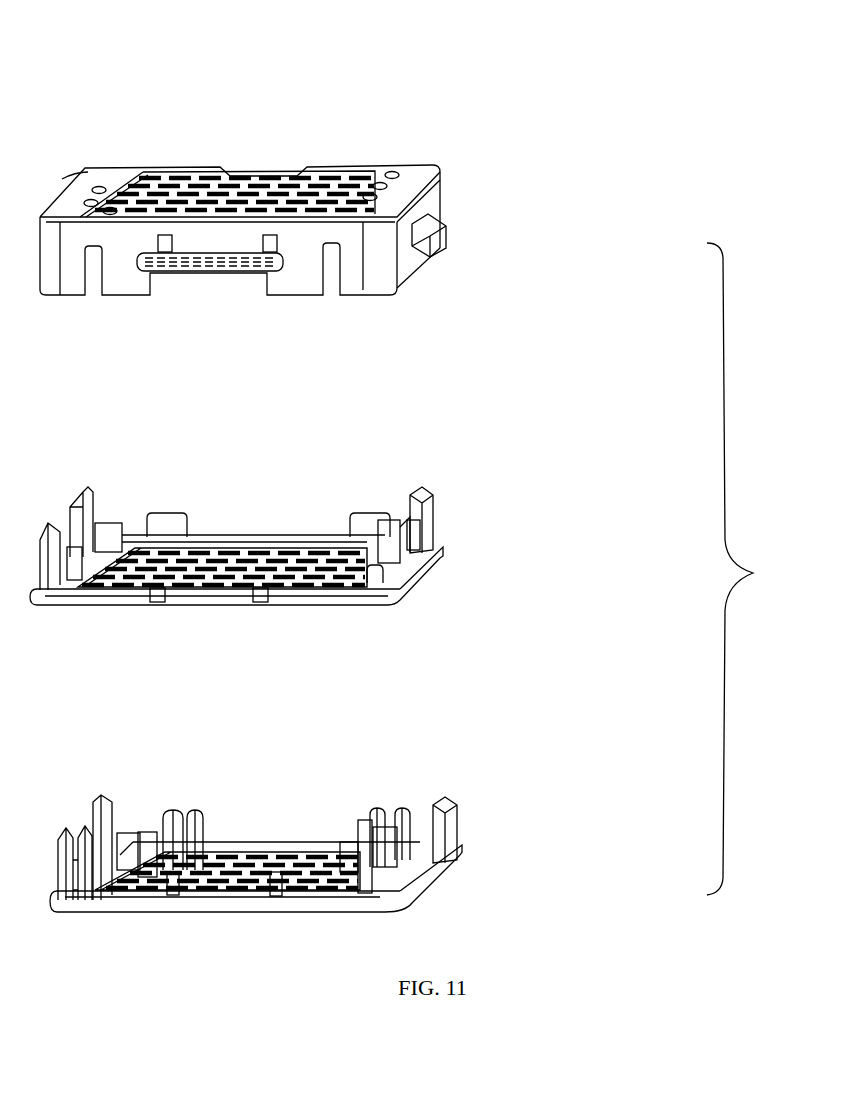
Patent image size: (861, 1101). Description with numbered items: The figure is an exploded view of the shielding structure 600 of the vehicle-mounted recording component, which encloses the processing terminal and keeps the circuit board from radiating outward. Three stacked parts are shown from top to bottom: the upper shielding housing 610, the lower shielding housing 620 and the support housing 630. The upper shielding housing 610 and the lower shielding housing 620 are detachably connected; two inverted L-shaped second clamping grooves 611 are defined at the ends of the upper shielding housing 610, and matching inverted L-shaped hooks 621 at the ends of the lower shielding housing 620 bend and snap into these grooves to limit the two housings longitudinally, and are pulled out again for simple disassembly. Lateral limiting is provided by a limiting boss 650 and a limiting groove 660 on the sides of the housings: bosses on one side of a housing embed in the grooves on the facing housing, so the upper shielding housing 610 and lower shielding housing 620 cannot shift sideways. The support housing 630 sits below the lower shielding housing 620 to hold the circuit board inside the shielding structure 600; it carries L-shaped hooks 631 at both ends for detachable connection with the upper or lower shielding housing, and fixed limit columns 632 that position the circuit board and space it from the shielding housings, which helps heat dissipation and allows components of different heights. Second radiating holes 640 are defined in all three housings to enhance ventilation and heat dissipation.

The shielding structure 600 is at (765, 569).
The upper shielding housing 610 is at (443, 243).
The second clamping groove 611 is at (415, 255).
The lower shielding housing 620 is at (423, 573).
The hook 621 is at (433, 497).
The support housing 630 is at (437, 885).
The L-shaped hook 631 is at (453, 805).
The limit column 632 is at (143, 833).
The second radiating hole 640 is at (238, 168).
The limiting boss 650 is at (287, 520).
The limiting groove 660 is at (163, 235).